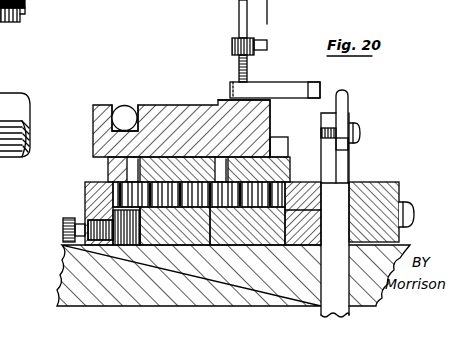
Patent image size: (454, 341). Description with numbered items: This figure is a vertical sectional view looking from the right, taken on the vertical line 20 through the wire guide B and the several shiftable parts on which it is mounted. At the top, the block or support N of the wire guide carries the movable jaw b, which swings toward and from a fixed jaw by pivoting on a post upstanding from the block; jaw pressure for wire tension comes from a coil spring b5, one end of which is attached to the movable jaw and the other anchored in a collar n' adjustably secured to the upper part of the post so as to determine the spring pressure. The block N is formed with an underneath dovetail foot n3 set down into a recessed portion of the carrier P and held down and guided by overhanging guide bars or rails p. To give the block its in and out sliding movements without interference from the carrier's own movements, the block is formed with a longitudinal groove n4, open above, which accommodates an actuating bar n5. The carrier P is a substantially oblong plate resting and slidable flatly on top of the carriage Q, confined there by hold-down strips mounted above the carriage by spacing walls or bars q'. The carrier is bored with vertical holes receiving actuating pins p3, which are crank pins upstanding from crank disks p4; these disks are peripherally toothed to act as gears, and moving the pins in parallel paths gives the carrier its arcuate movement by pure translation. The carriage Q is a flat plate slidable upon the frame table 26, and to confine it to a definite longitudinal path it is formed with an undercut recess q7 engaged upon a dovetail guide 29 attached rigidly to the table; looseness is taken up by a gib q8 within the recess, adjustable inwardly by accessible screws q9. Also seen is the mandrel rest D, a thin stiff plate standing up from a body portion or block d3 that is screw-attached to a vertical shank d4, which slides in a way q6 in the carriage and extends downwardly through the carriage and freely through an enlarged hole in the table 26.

The section line 20— 20 is at (279, 27).
The block or support N is at (168, 112).
The groove n4 is at (112, 133).
The actuating bar n5 is at (124, 112).
The dovetail foot n3 is at (260, 128).
The guide bars or rails p is at (280, 148).
The movable jaw b is at (277, 92).
The wire guide B is at (319, 83).
The collar n' is at (235, 27).
The coil spring b5 is at (239, 70).
The rest D is at (345, 101).
The vertical shank d4 is at (350, 168).
The body portion or block d3 is at (360, 144).
The bore / hole q6 is at (326, 203).
The carrier P is at (110, 165).
The dovetail guide 29 is at (200, 244).
The actuating pins p3 is at (165, 207).
The crank disks p4 is at (222, 206).
The gib q8 is at (125, 246).
The carriage Q is at (90, 202).
The screws q9 is at (72, 232).
The undercut recess q7 is at (304, 232).
The spacing walls or bars q' is at (395, 211).
The frame table 26 is at (72, 280).